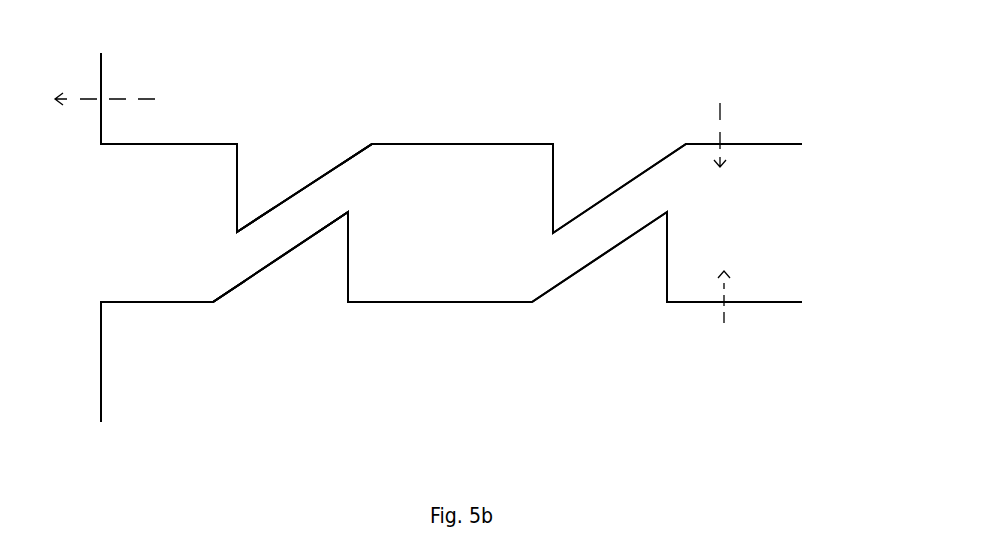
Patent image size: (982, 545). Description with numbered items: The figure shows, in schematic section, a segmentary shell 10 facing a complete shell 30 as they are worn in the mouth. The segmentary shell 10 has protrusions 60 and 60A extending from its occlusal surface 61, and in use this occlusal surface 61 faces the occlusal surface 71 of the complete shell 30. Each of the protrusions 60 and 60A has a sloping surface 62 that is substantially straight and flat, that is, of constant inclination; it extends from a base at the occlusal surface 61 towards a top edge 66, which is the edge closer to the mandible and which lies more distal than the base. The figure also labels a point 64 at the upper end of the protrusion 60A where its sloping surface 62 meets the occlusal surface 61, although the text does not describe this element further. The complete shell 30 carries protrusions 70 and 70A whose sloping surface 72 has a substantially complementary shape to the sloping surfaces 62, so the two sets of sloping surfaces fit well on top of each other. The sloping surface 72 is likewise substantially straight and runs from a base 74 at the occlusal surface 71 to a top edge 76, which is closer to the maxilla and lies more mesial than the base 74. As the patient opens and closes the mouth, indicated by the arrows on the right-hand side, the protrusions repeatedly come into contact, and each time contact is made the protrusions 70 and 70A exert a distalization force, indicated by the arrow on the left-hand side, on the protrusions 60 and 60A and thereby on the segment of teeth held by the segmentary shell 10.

The segmentary shell 10 is at (772, 143).
The complete shell 30 is at (753, 298).
The protrusion 60 is at (606, 167).
The protrusion 60A is at (282, 167).
The occlusal surface 61 is at (755, 147).
The sloping surface 62 is at (323, 175).
The first profile upper corner 64 is at (371, 143).
The top edge 66 is at (227, 222).
The protrusion 70 is at (598, 280).
The protrusion 70A is at (282, 278).
The occlusal surface 71 is at (686, 300).
The sloping surface 72 is at (257, 272).
The base 74 is at (210, 303).
The top edge 76 is at (353, 212).